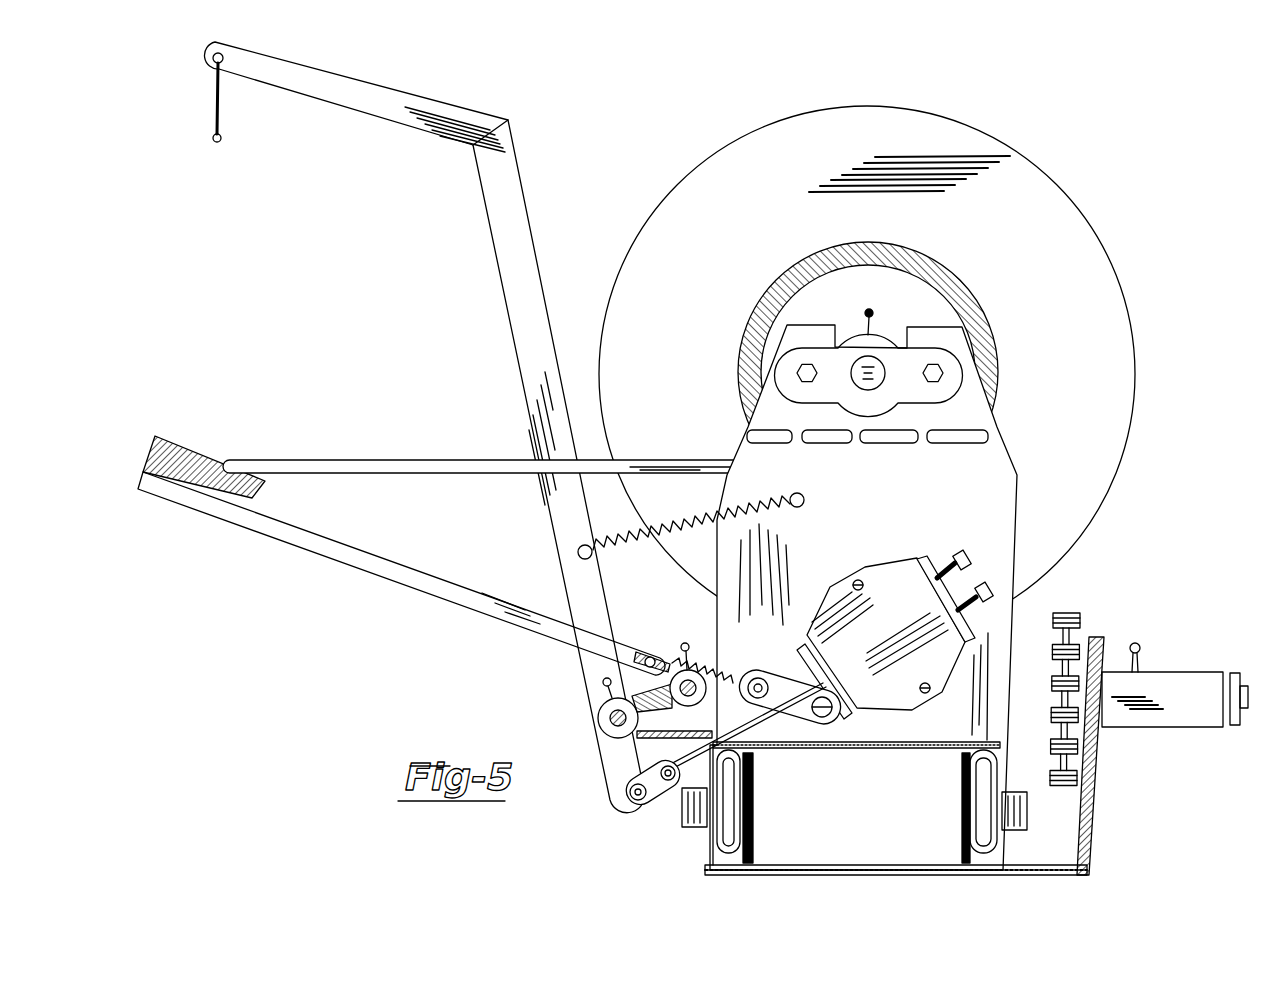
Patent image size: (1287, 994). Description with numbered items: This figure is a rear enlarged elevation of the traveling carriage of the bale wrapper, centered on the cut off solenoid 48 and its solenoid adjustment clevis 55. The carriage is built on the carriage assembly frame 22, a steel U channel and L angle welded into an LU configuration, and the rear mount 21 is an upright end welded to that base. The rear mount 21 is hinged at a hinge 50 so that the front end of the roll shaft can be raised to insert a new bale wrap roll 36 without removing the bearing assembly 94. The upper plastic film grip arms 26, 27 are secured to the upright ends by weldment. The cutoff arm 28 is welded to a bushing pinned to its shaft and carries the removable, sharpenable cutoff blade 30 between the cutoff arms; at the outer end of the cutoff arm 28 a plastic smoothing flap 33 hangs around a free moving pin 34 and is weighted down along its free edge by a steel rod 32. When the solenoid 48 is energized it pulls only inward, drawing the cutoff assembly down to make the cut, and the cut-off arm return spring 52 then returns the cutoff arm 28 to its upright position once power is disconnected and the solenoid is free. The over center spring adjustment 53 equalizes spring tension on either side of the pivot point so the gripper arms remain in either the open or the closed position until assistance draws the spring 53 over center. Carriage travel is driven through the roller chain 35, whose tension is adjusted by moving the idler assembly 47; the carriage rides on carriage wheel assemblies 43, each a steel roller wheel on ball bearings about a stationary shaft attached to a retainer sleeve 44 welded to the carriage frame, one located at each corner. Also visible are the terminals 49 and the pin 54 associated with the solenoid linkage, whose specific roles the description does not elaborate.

The rear mount 21 is at (980, 482).
The carriage assembly frame 22 is at (903, 864).
The upper plastic film grip arm 26 is at (460, 586).
The upper plastic film grip arm 27 is at (433, 467).
The cutoff arm 28 is at (537, 365).
The cutoff blade 30 is at (473, 144).
The steel rod 32 is at (209, 140).
The plastic smoothing flap 33 is at (222, 83).
The free moving pin 34 is at (211, 64).
The roller chain 35 is at (1077, 615).
The bale wrap roll 36 is at (1141, 343).
The carriage wheel assembly 43 is at (710, 830).
The retainer sleeve 44 is at (1012, 828).
The idler assembly 47 is at (1175, 697).
The cut off solenoid 48 is at (863, 670).
The solenoid terminals 49 is at (990, 590).
The hinge 50 is at (893, 433).
The cut-off arm return spring 52 is at (648, 548).
The over center spring adjustment 53 is at (717, 660).
The pin 54 is at (820, 716).
The solenoid adjustment clevis 55 is at (637, 806).
The bearing assembly 94 is at (972, 368).